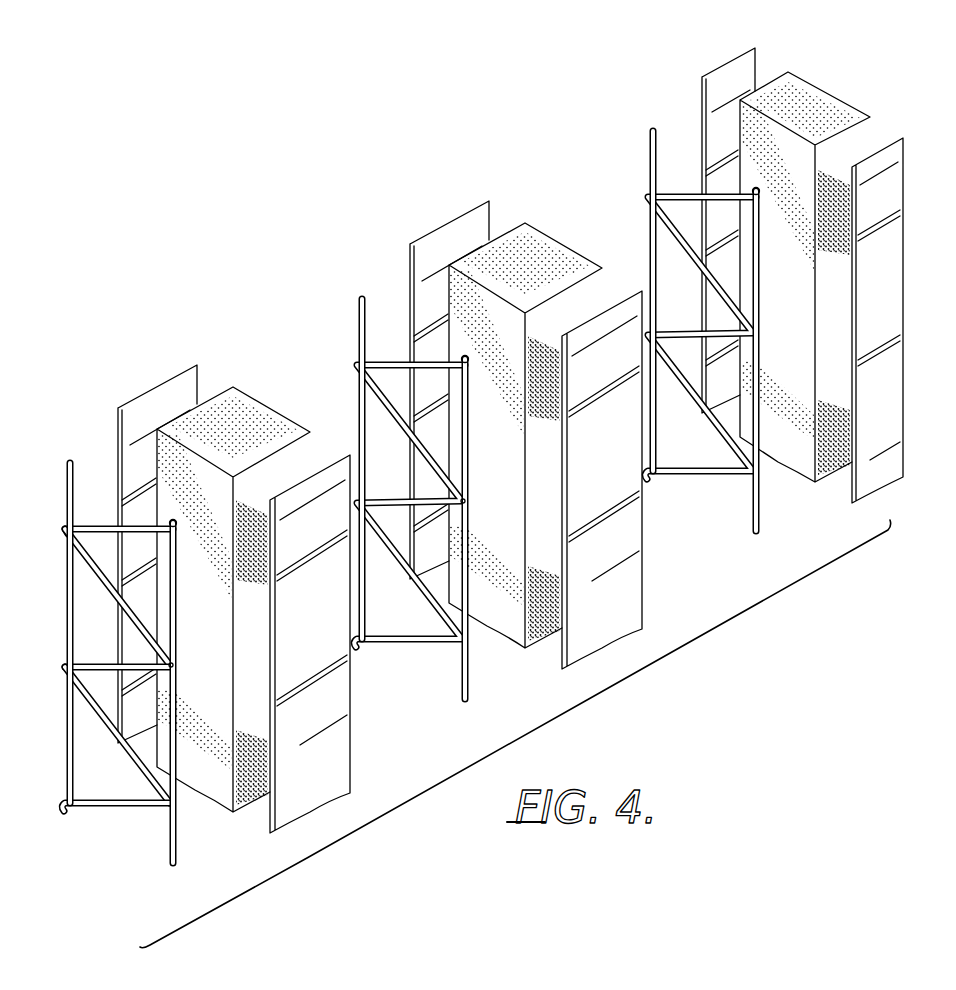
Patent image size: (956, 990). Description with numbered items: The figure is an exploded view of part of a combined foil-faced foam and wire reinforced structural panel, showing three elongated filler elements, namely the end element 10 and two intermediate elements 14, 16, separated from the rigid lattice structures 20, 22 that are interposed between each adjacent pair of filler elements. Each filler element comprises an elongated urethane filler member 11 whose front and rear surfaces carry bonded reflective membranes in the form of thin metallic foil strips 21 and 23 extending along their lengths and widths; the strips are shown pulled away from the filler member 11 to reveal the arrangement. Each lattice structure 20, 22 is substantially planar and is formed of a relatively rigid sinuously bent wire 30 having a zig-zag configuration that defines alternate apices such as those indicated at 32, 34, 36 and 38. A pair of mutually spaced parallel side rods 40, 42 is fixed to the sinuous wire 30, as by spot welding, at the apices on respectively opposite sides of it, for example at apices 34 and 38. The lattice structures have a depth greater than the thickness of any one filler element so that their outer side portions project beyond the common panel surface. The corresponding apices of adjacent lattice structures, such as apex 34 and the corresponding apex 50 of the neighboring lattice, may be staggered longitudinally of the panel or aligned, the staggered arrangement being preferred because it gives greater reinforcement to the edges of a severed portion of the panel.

The end element 10 is at (236, 368).
The urethane filler member 11 is at (243, 400).
The intermediate element 14 is at (530, 202).
The intermediate element 16 is at (800, 57).
The lattice structure 20 is at (472, 464).
The metallic foil strip 21 is at (345, 712).
The lattice structure 22 is at (762, 307).
The metallic foil strip 23 is at (149, 392).
The sinuously bent wire 30 is at (113, 677).
The apex 32 is at (63, 530).
The apex 34 is at (176, 663).
The apex 36 is at (62, 667).
The apex 38 is at (175, 806).
The side rod 40 is at (177, 594).
The side rod 42 is at (66, 707).
The apex 50 is at (468, 502).